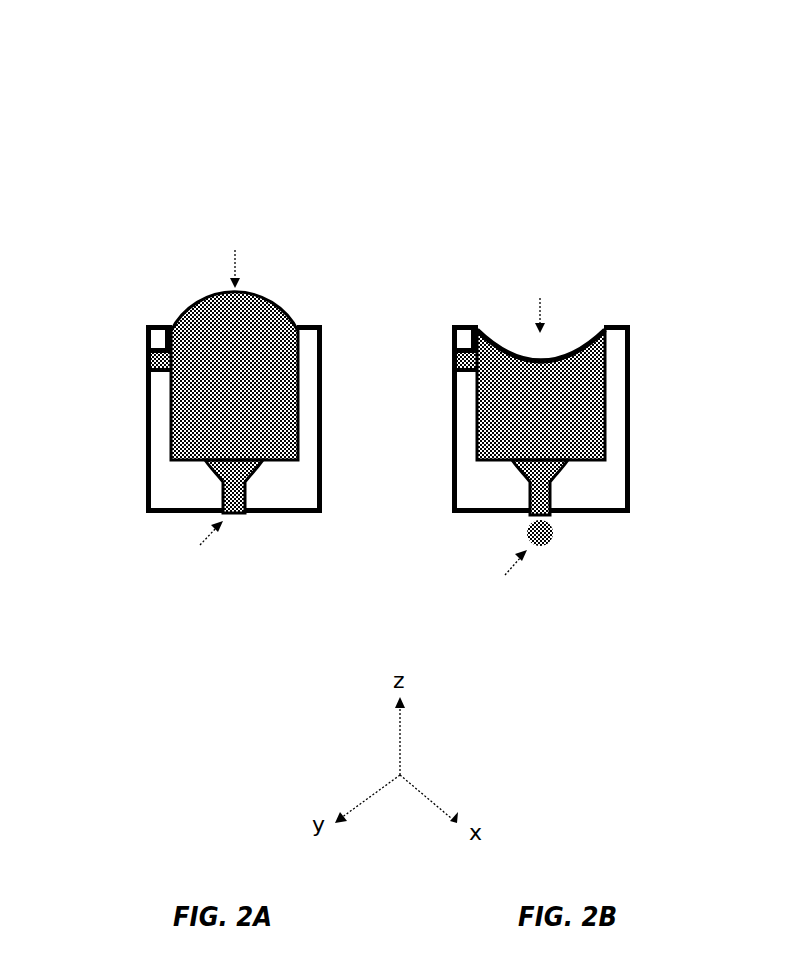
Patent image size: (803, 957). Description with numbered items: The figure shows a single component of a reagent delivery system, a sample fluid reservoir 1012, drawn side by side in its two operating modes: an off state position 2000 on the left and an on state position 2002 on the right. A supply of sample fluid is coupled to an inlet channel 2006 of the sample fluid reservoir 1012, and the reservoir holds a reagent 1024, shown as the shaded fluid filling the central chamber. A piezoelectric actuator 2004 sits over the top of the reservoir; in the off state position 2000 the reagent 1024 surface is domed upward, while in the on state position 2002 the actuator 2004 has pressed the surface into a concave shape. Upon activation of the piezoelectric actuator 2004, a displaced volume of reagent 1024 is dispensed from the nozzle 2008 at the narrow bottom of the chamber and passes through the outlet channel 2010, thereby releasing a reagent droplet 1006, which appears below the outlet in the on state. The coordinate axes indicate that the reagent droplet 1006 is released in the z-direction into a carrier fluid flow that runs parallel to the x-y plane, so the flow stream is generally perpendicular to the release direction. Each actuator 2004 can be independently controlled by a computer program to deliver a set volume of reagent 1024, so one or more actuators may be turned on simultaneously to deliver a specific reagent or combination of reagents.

In FIG. 2A, the off state position 2000 is at (186, 100).
In FIG. 2B, the on state position 2002 is at (546, 104).
In FIG. 2A, the piezoelectric actuator 2004 is at (185, 237).
In FIG. 2B, the piezoelectric actuator 2004 is at (580, 268).
In FIG. 2A, the reagent 1024 is at (213, 340).
In FIG. 2B, the reagent 1024 is at (553, 377).
In FIG. 2A, the inlet channel 2006 is at (150, 352).
In FIG. 2B, the inlet channel 2006 is at (452, 352).
In FIG. 2A, the sample fluid reservoir 1012 is at (160, 458).
In FIG. 2B, the sample fluid reservoir 1012 is at (617, 410).
In FIG. 2A, the nozzle 2008 is at (232, 515).
In FIG. 2A, the outlet channel 2010 is at (242, 515).
In FIG. 2B, the outlet channel 2010 is at (547, 518).
In FIG. 2B, the reagent droplet 1006 is at (537, 548).